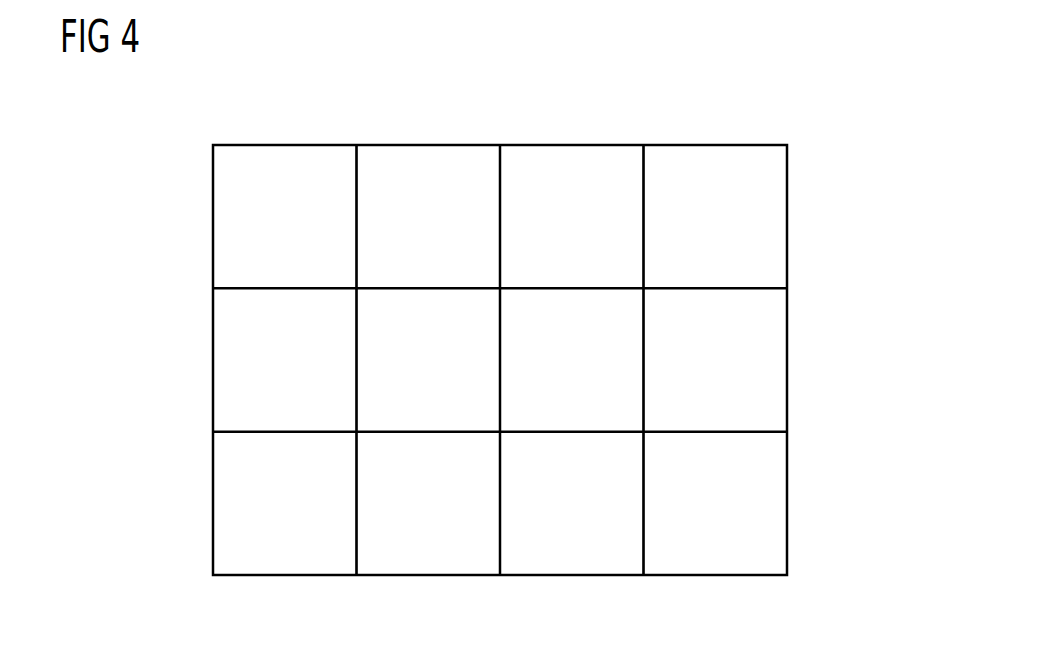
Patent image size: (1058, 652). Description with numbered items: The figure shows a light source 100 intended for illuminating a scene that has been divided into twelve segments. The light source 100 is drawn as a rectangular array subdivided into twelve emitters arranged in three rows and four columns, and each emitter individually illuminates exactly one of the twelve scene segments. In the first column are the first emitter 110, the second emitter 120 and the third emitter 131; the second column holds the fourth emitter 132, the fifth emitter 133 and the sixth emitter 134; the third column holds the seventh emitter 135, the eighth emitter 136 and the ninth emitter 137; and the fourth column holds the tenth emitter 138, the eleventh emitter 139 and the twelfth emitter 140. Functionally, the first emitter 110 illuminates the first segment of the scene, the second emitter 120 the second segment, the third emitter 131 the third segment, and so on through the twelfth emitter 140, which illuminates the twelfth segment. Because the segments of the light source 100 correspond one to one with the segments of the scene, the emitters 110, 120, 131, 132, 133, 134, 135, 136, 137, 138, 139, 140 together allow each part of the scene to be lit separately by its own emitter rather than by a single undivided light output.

The light source 100 is at (835, 112).
The first emitter 110 is at (308, 234).
The second emitter 120 is at (308, 377).
The third emitter 131 is at (308, 520).
The fourth emitter 132 is at (405, 234).
The fifth emitter 133 is at (405, 377).
The sixth emitter 134 is at (405, 520).
The seventh emitter 135 is at (595, 234).
The eighth emitter 136 is at (595, 377).
The ninth emitter 137 is at (595, 520).
The tenth emitter 138 is at (692, 234).
The eleventh emitter 139 is at (692, 377).
The twelfth emitter 140 is at (692, 520).